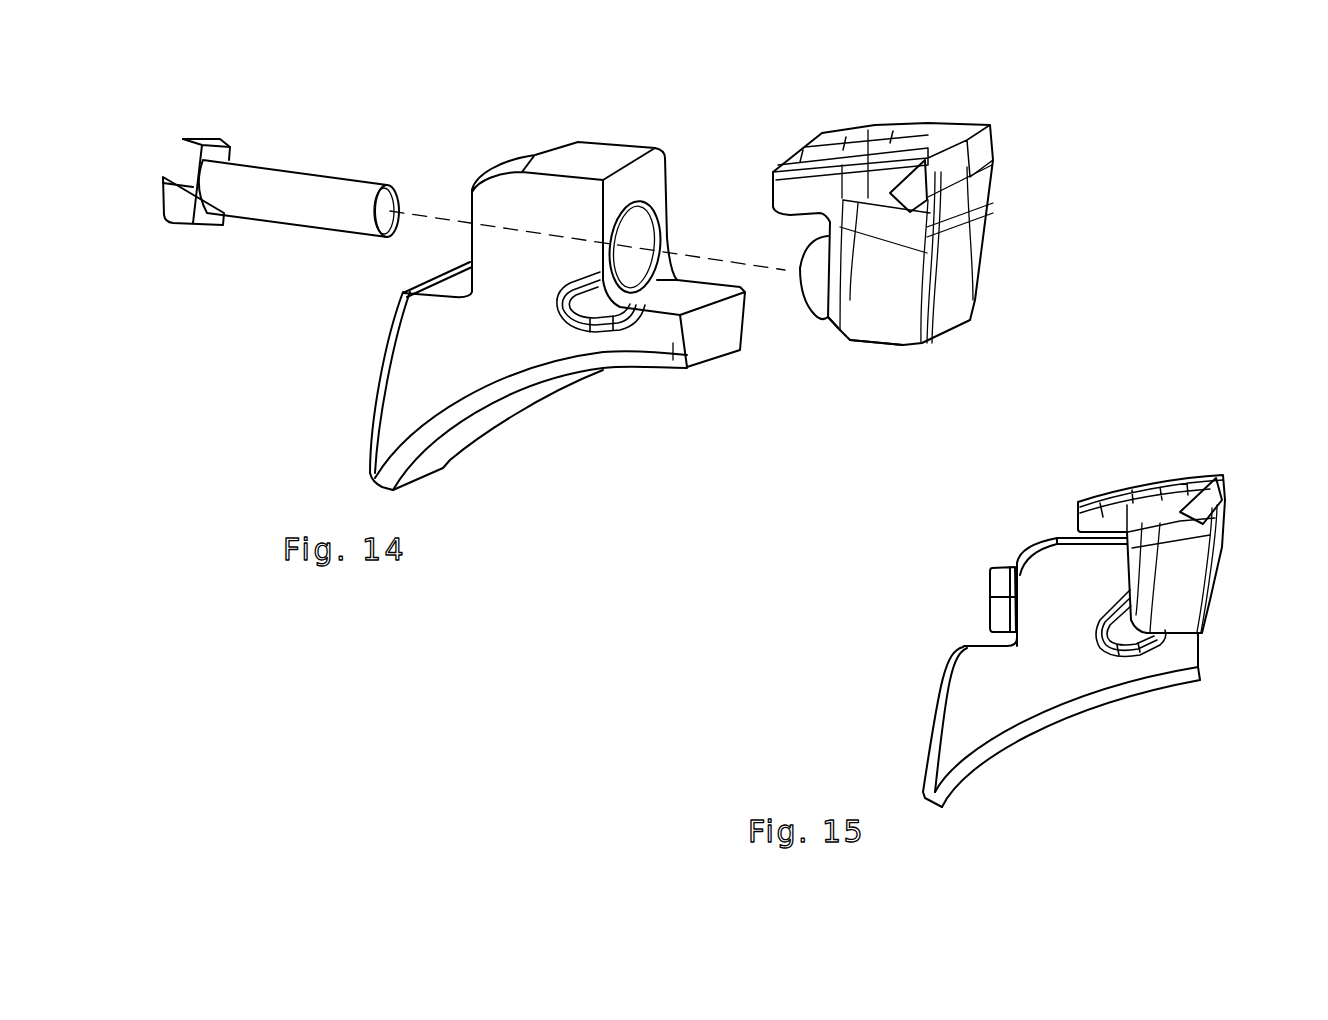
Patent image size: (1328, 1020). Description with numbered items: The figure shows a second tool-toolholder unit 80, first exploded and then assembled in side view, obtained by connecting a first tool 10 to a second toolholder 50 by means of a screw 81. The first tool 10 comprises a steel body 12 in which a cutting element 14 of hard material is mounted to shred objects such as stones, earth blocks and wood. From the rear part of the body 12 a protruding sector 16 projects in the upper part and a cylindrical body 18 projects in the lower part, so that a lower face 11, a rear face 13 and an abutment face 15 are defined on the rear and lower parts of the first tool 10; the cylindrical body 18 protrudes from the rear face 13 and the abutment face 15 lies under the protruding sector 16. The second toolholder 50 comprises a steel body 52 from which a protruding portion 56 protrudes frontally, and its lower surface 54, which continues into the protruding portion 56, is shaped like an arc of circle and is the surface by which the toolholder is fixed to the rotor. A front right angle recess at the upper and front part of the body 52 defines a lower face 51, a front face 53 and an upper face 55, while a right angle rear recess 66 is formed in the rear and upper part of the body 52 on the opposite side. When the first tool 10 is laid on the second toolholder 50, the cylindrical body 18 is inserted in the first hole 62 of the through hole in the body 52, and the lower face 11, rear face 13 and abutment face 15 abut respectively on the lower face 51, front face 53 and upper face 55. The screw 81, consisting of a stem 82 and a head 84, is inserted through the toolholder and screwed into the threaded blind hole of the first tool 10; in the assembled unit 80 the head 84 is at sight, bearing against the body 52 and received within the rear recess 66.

In FIG. 14, the first tool 10 is at (916, 259).
In FIG. 15, the first tool 10 is at (1172, 501).
In FIG. 14, the lower face 11 is at (890, 345).
In FIG. 14, the body 12 is at (898, 280).
In FIG. 15, the body 12 is at (1170, 580).
In FIG. 14, the rear face 13 is at (822, 320).
In FIG. 14, the cutting element 14 is at (908, 186).
In FIG. 15, the cutting element 14 is at (1225, 492).
In FIG. 14, the abutment face 15 is at (790, 225).
In FIG. 14, the protruding sector 16 is at (823, 190).
In FIG. 15, the protruding sector 16 is at (1100, 518).
In FIG. 14, the cylindrical body 18 is at (812, 283).
In FIG. 14, the second toolholder 50 is at (557, 284).
In FIG. 15, the second toolholder 50 is at (970, 682).
In FIG. 14, the lower face 51 is at (700, 277).
In FIG. 14, the body 52 is at (438, 361).
In FIG. 14, the front face 53 is at (654, 280).
In FIG. 15, the lower surface 54 is at (1027, 727).
In FIG. 14, the upper face 55 is at (590, 157).
In FIG. 14, the protruding portion 56 is at (673, 343).
In FIG. 15, the protruding portion 56 is at (1177, 657).
In FIG. 14, the first hole 62 is at (630, 262).
In FIG. 14, the rear recess 66 is at (452, 265).
In FIG. 15, the rear recess 66 is at (960, 630).
In FIG. 15, the second tool-toolholder unit 80 is at (981, 528).
In FIG. 14, the screw 81 is at (275, 146).
In FIG. 14, the stem 82 is at (312, 188).
In FIG. 14, the head 84 is at (198, 160).
In FIG. 15, the head 84 is at (1000, 588).